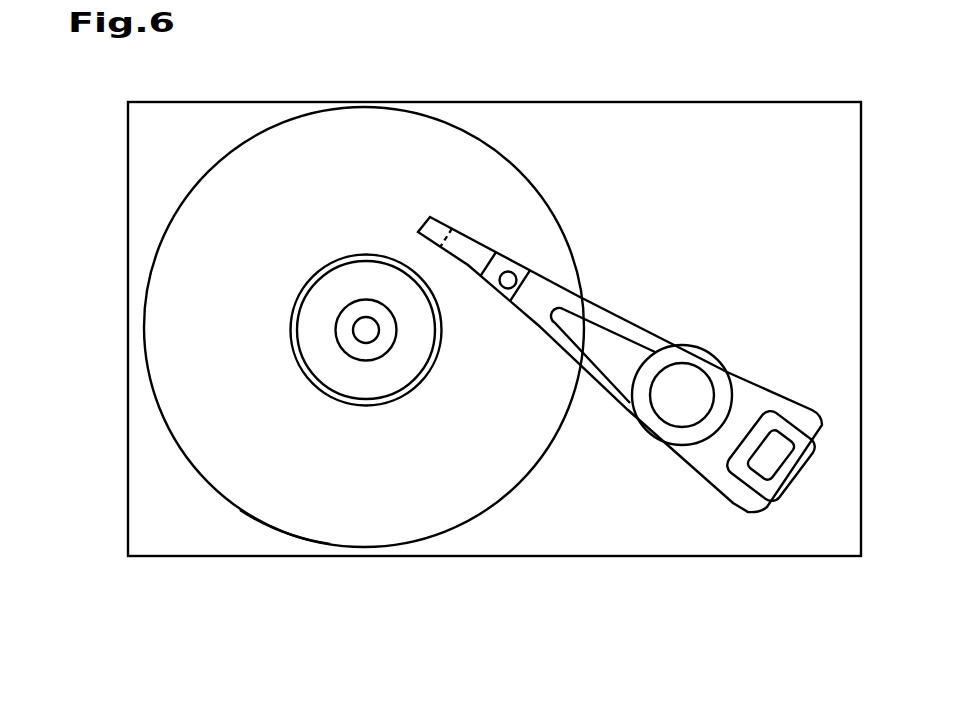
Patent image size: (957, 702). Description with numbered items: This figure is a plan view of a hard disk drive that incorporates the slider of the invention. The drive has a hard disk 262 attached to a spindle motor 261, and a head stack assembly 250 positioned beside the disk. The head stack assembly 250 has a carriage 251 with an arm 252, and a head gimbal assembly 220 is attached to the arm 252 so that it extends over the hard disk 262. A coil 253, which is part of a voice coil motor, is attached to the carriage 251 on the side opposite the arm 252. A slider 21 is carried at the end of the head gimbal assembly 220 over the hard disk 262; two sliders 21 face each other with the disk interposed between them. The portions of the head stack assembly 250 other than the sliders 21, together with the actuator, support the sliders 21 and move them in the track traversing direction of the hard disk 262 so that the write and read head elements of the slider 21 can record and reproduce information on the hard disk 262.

The slider 21 is at (440, 216).
The head gimbal assembly 220 is at (475, 283).
The head stack assembly 250 is at (620, 328).
The carriage 251 is at (692, 345).
The arm 252 is at (580, 366).
The coil 253 is at (807, 472).
The spindle motor 261 is at (367, 343).
The hard disk 262 is at (284, 537).